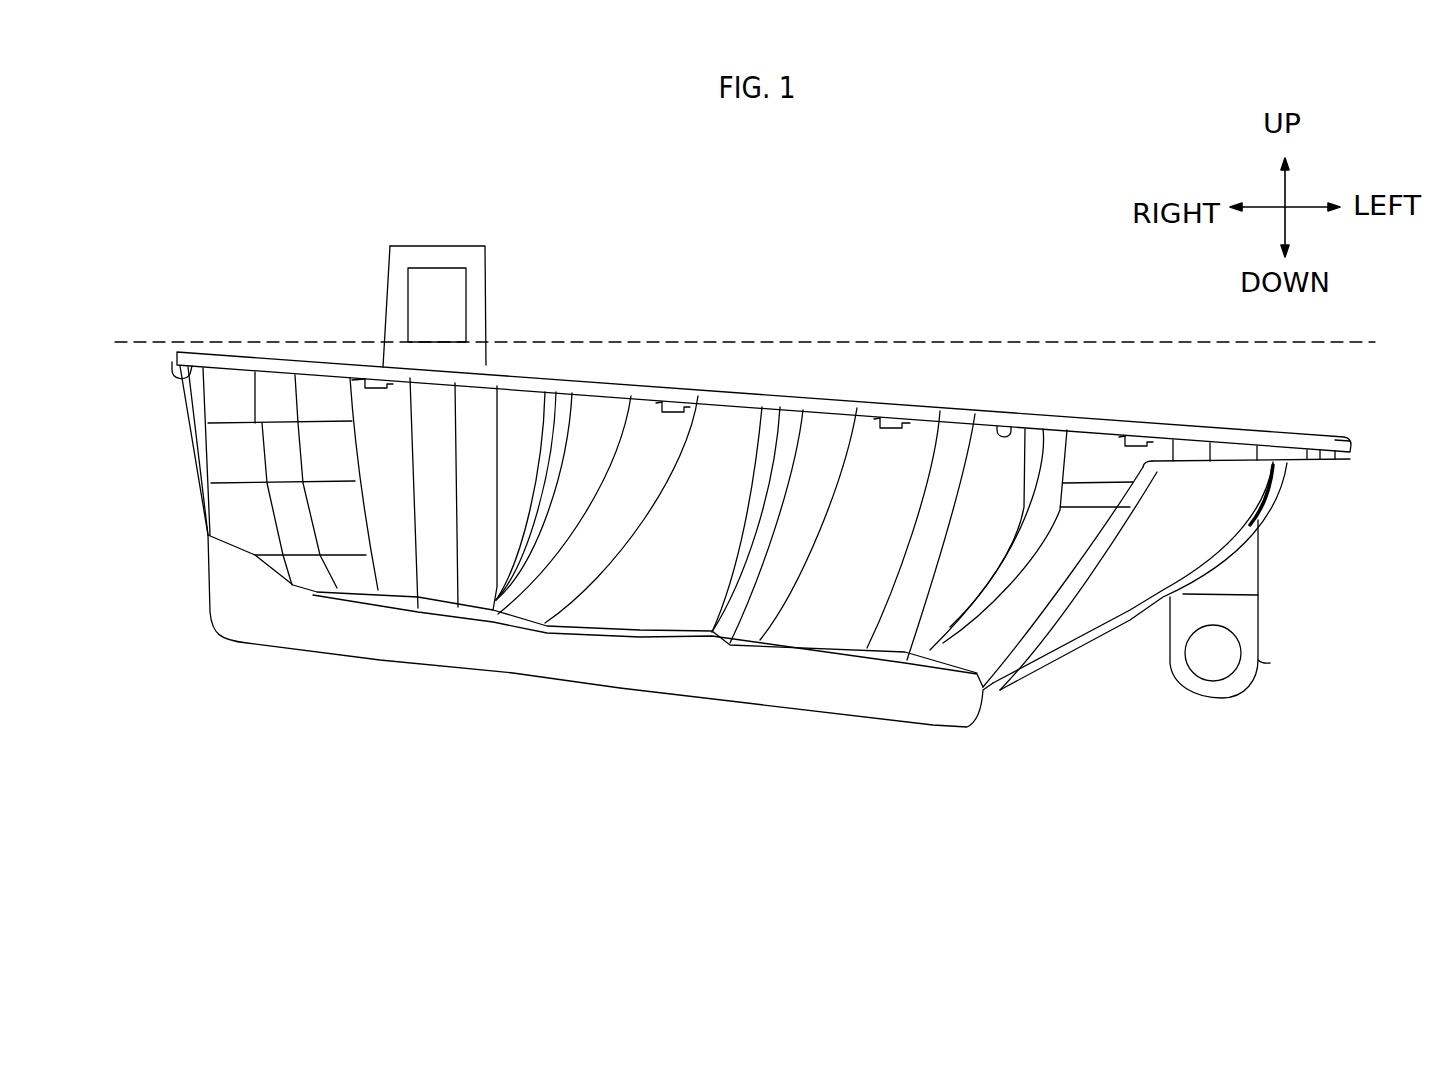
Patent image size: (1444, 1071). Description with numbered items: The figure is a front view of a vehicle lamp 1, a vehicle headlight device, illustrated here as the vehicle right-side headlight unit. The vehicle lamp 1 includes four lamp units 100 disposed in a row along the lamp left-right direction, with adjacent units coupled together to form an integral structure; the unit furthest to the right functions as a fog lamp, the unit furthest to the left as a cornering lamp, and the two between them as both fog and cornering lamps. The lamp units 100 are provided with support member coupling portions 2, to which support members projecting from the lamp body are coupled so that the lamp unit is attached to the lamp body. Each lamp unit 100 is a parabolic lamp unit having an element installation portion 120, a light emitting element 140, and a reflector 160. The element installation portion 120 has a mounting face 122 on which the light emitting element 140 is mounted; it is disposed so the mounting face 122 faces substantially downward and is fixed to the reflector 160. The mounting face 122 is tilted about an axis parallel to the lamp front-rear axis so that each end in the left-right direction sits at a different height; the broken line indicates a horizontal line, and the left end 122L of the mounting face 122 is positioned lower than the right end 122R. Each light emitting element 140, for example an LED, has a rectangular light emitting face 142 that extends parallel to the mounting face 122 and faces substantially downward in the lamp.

The vehicle lamp 1 is at (733, 884).
The support member coupling portion 2 is at (431, 246).
The lamp unit 100 is at (515, 367).
The element installation portion 120 is at (1287, 423).
The mounting face 122 is at (1006, 426).
The left end 122L is at (1317, 463).
The right end 122R is at (172, 362).
The light emitting element 140 is at (350, 383).
The light emitting face 142 is at (378, 389).
The reflector 160 is at (400, 555).